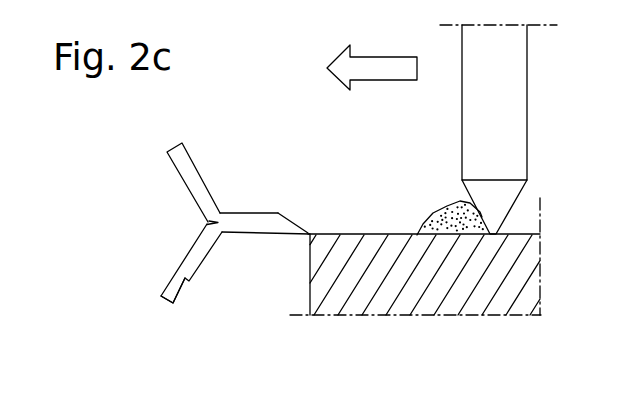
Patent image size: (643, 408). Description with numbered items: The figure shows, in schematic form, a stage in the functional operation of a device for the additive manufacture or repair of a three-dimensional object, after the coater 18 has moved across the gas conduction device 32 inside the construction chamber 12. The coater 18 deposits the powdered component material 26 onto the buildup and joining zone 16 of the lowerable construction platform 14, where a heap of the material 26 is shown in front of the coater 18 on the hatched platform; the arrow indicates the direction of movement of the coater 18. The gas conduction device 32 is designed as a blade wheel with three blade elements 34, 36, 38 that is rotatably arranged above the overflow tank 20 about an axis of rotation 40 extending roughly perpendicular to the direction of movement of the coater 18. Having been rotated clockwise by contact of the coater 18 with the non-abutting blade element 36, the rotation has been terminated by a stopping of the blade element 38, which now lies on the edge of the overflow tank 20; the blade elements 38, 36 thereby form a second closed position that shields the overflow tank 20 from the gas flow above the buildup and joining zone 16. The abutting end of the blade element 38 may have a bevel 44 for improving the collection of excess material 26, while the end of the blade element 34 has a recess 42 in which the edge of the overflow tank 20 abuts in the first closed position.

The construction chamber 12 is at (393, 137).
The construction platform 14 is at (517, 237).
The buildup and joining zone 16 is at (540, 221).
The coater 18 is at (508, 92).
The overflow tank 20 is at (227, 215).
The component material 26 is at (461, 237).
The gas conduction device 32 is at (227, 215).
The blade element 34 is at (180, 272).
The blade element 36 is at (187, 180).
The blade element 38 is at (265, 219).
The axis of rotation 40 is at (216, 224).
The recess 42 is at (175, 300).
The bevel 44 is at (293, 222).